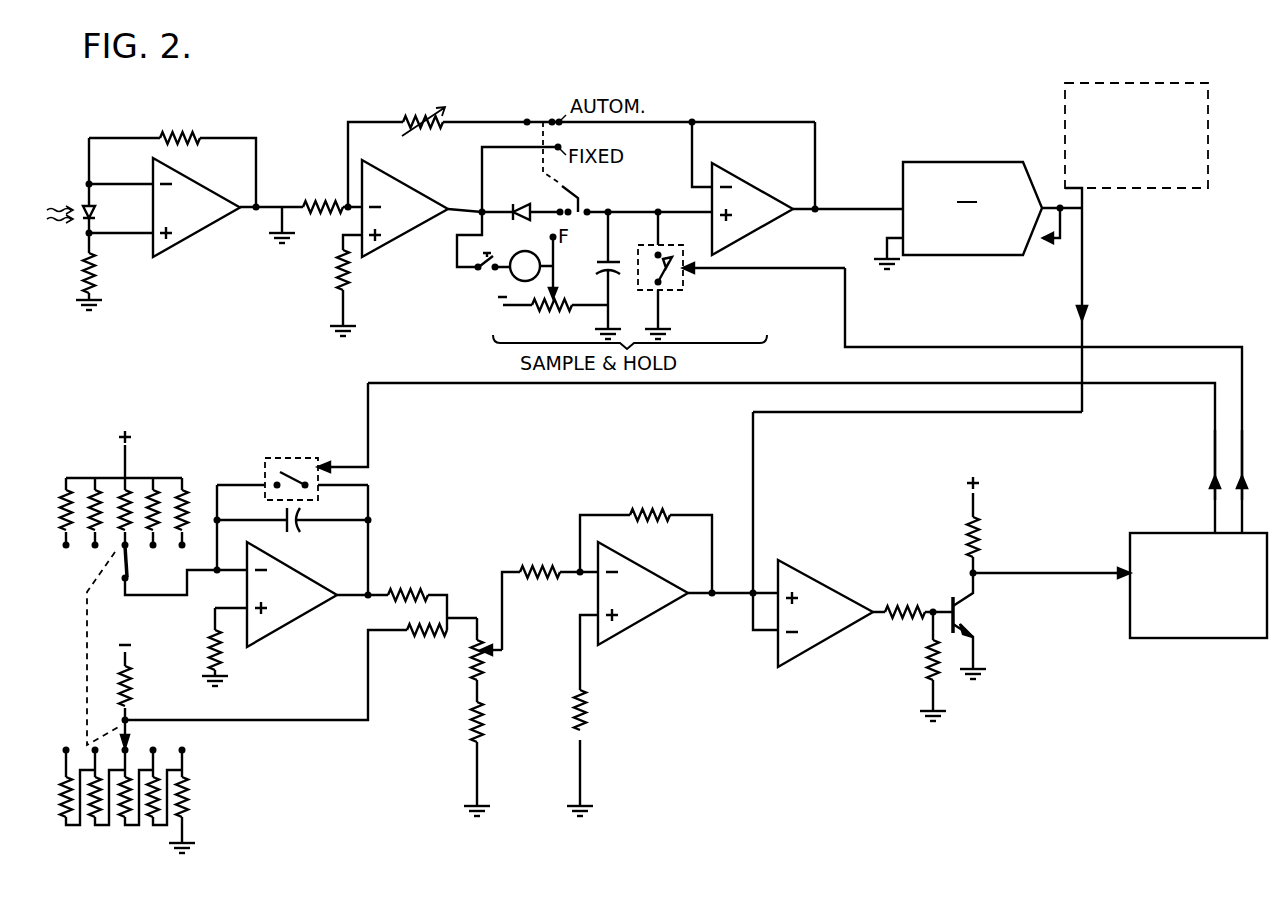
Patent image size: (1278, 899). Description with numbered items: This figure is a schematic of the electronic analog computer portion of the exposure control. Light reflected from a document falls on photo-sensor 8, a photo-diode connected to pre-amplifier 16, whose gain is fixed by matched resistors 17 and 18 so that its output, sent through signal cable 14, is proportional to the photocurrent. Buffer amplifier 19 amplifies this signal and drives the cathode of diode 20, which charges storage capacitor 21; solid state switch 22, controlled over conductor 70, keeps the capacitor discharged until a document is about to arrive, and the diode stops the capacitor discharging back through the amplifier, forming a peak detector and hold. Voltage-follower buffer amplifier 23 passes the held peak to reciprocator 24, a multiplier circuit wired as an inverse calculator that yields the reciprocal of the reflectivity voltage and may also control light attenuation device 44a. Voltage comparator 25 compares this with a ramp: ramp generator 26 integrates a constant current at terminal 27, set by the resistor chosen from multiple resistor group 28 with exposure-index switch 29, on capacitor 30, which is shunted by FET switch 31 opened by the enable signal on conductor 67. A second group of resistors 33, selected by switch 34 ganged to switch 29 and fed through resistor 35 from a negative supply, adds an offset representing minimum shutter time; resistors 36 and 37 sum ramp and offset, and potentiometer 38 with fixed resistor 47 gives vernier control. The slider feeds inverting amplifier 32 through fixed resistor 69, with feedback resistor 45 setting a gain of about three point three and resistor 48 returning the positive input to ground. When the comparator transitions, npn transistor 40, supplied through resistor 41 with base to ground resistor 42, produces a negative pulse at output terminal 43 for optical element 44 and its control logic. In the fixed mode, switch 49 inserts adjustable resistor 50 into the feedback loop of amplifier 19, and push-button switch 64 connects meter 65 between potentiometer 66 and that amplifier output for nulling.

The photo-sensor 8 is at (93, 214).
The signal cable 14 is at (282, 206).
The pre-amplifier 16 is at (203, 196).
The resistor 17 is at (96, 270).
The resistor 18 is at (184, 132).
The buffer amplifier 19 is at (416, 200).
The diode 20 is at (511, 206).
The storage capacitor 21 is at (616, 258).
The solid state switch 22 is at (686, 284).
The voltage-follower buffer amplifier 23 is at (770, 191).
The reciprocator 24 is at (990, 158).
The voltage comparator 25 is at (821, 583).
The ramp generator 26 is at (314, 582).
The terminal 27 is at (137, 574).
The multiple resistor group 28 is at (153, 476).
The single-pole multiple-contact switch 29 is at (112, 551).
The capacitor 30 is at (300, 524).
The single-pole switch 31 is at (286, 457).
The inverting amplifier 32 is at (658, 578).
The second group of resistors 33 is at (136, 840).
The single-pole multiple-contact switch 34 is at (136, 748).
The resistor 35 is at (143, 683).
The resistor 36 is at (412, 587).
The resistor 37 is at (421, 638).
The potentiometer 38 is at (484, 660).
The npn transistor 40 is at (975, 612).
The resistor 41 is at (979, 530).
The base to ground resistor 42 is at (923, 652).
The output terminal 43 is at (908, 606).
The optical element 44 is at (1166, 639).
The light attenuation device 44a is at (1118, 189).
The feedback resistor 45 is at (648, 510).
The fixed resistor 47 is at (482, 730).
The resistor 48 is at (590, 720).
The ganged double-pole double-throw switch 49 is at (562, 183).
The resistor 50 is at (425, 130).
The momentary push-button switch 64 is at (480, 272).
The meter 65 is at (525, 255).
The potentiometer 66 is at (550, 311).
The conductor 67 is at (1213, 460).
The fixed resistor 69 is at (537, 567).
The conductor 70 is at (1248, 458).